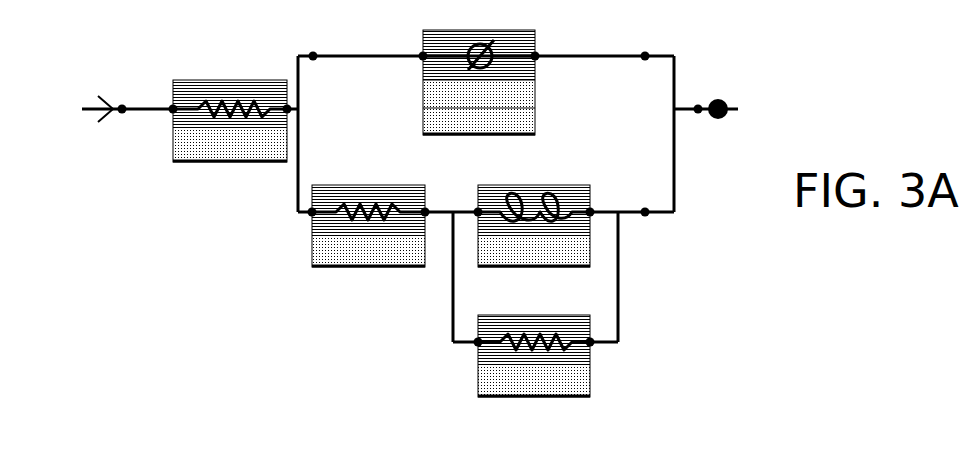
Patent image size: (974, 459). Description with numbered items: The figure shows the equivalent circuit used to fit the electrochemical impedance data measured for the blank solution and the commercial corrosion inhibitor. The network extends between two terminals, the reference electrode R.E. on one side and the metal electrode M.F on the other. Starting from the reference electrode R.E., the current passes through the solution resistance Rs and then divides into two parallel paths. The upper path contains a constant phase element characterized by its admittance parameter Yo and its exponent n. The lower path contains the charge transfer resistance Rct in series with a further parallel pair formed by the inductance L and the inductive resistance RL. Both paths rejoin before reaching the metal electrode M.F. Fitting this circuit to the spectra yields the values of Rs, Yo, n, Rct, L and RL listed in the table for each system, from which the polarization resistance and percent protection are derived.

The solution resistance Rs is at (230, 121).
The constant phase element admittance Yo is at (479, 82).
The constant phase element exponent n is at (480, 124).
The charge transfer resistance Rct is at (368, 226).
The inductance L is at (534, 226).
The inductive resistance RL is at (534, 356).
The reference electrode R.E. is at (83, 138).
The metal film electrode M.F is at (720, 138).